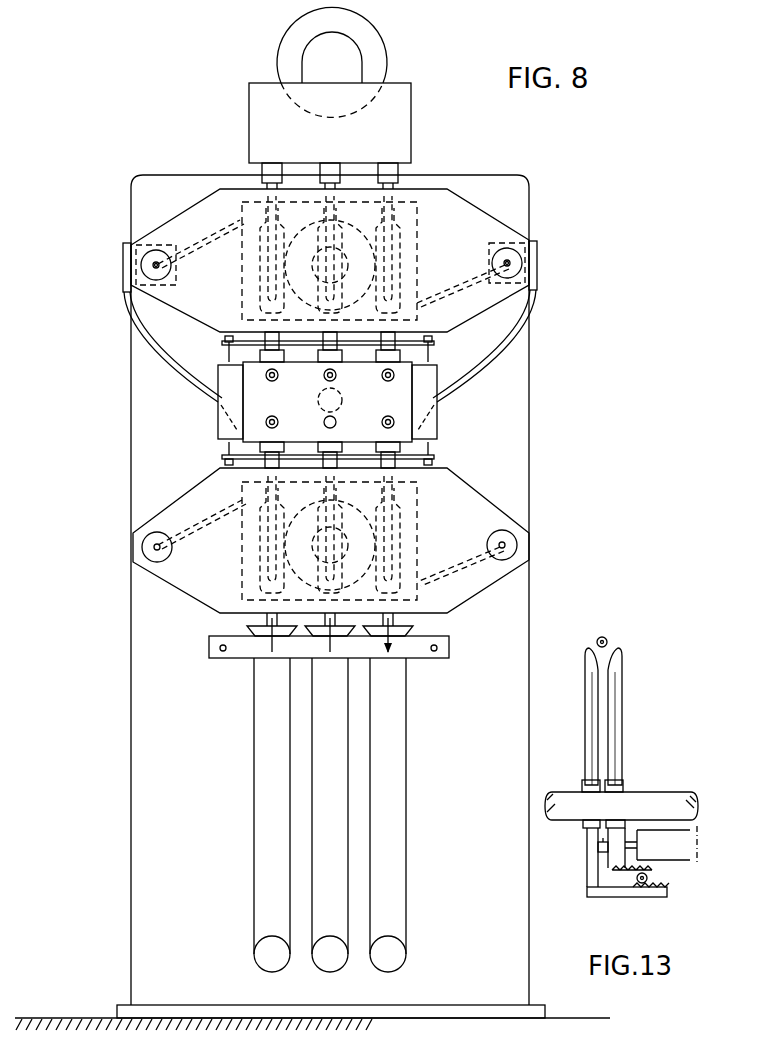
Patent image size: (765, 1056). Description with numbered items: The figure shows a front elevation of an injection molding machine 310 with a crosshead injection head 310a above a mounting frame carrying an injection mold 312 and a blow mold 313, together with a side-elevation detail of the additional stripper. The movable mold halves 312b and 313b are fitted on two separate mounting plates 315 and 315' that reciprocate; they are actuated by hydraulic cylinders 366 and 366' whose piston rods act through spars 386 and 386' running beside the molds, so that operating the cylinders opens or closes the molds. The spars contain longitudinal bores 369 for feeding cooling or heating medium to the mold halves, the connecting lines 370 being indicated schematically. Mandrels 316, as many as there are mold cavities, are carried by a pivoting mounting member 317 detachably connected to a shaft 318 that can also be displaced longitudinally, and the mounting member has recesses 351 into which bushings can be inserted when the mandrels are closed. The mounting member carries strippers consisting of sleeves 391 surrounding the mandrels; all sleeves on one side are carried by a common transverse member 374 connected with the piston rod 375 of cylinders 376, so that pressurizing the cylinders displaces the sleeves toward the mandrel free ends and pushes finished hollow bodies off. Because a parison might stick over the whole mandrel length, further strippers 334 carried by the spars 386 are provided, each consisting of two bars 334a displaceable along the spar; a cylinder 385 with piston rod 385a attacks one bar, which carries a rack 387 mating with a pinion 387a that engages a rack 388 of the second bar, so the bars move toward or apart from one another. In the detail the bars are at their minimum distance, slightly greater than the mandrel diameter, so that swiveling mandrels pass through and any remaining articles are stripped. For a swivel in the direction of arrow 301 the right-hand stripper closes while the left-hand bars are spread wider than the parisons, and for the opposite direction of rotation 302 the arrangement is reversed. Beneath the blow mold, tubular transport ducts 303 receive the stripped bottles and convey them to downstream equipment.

In FIG. 8, the arrow (swivel direction) 301 is at (447, 470).
In FIG. 8, the opposite direction of rotation 302 is at (300, 300).
In FIG. 8, the tubular transport ducts 303 is at (264, 750).
In FIG. 8, the injection molding machine 310 is at (377, 41).
In FIG. 8, the crosshead injection head 310a is at (396, 118).
In FIG. 8, the injection mold 312 is at (466, 306).
In FIG. 8, the injection mold half 312b is at (418, 224).
In FIG. 8, the blow mold 313 is at (435, 596).
In FIG. 8, the blow mold half 313b is at (418, 505).
In FIG. 8, the mounting plate 315 is at (353, 260).
In FIG. 8, the mounting plate 315' is at (357, 540).
In FIG. 13, the mandrels 316 is at (606, 637).
In FIG. 8, the pivoting mounting member 317 is at (434, 380).
In FIG. 8, the shaft 318 is at (344, 405).
In FIG. 8, the strippers 334 is at (148, 354).
In FIG. 13, the strippers 334 is at (630, 672).
In FIG. 13, the bars 334a is at (626, 698).
In FIG. 8, the recesses 351 is at (218, 364).
In FIG. 8, the hydraulic cylinder 366 is at (360, 230).
In FIG. 8, the hydraulic cylinder 366' is at (293, 534).
In FIG. 8, the longitudinal bores 369 is at (158, 258).
In FIG. 8, the connecting lines 370 is at (198, 237).
In FIG. 8, the transverse member 374 is at (279, 377).
In FIG. 8, the piston rod 375 is at (431, 356).
In FIG. 8, the cylinders 376 is at (215, 382).
In FIG. 13, the cylinder 385 is at (668, 832).
In FIG. 13, the piston rod 385a is at (603, 855).
In FIG. 8, the spar 386 is at (333, 264).
In FIG. 13, the spar 386 is at (618, 786).
In FIG. 8, the spar 386' is at (369, 536).
In FIG. 13, the rack 387 is at (647, 886).
In FIG. 13, the pinion 387a is at (648, 881).
In FIG. 13, the rack 388 is at (630, 875).
In FIG. 8, the sleeves 391 is at (252, 338).